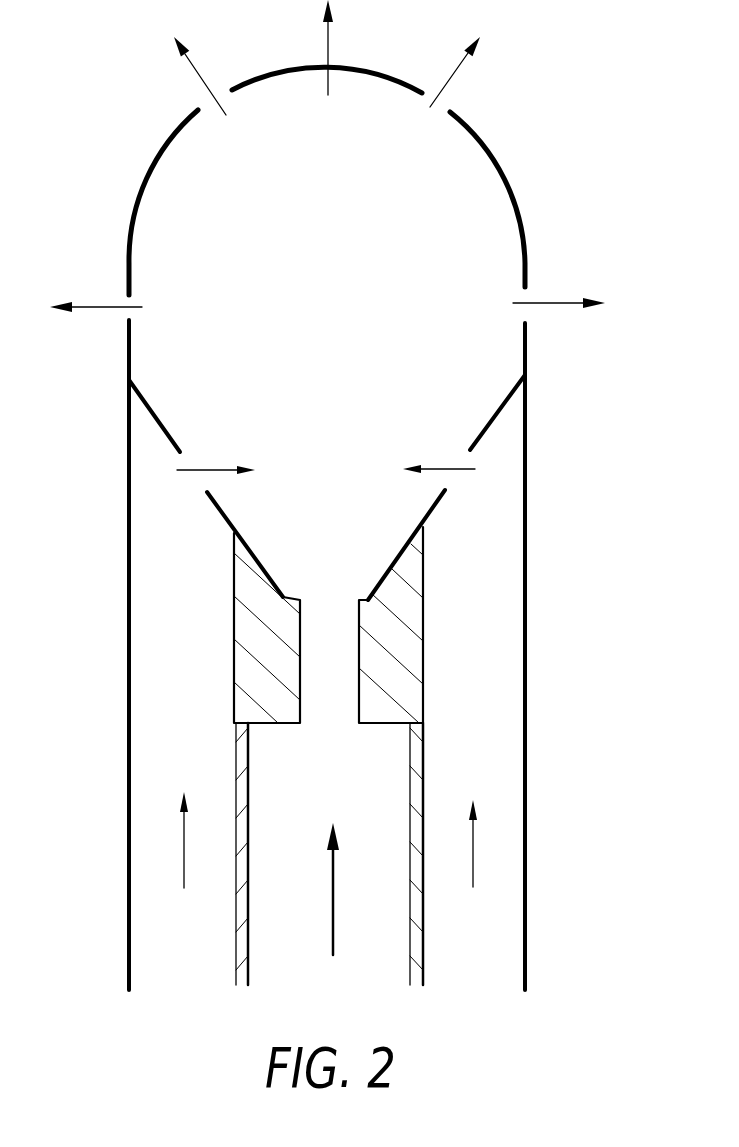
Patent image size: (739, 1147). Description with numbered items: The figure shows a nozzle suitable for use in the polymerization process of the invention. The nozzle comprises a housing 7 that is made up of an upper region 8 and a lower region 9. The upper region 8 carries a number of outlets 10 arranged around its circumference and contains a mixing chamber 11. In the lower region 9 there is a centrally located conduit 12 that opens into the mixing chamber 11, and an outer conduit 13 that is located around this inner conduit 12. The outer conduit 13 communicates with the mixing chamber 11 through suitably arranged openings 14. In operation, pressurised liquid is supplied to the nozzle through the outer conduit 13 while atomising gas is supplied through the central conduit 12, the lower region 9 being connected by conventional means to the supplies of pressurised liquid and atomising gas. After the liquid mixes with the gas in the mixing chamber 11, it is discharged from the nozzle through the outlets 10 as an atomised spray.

The housing 7 is at (540, 531).
The upper region 8 is at (527, 362).
The lower region 9 is at (527, 662).
The outlets 10 is at (196, 110).
The mixing chamber 11 is at (362, 267).
The centrally located conduit 12 is at (282, 892).
The outer conduit 13 is at (174, 733).
The openings 14 is at (204, 488).